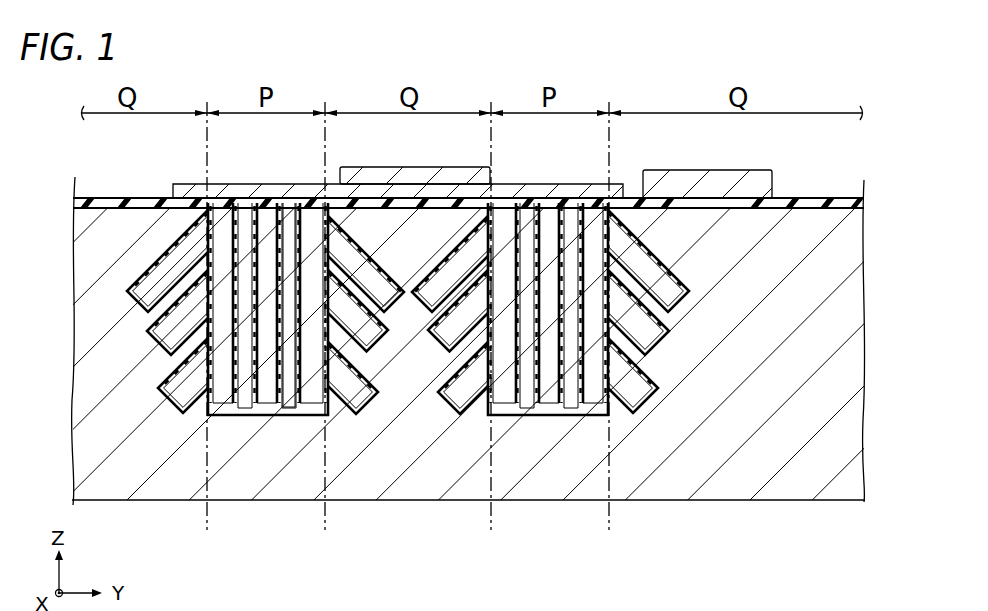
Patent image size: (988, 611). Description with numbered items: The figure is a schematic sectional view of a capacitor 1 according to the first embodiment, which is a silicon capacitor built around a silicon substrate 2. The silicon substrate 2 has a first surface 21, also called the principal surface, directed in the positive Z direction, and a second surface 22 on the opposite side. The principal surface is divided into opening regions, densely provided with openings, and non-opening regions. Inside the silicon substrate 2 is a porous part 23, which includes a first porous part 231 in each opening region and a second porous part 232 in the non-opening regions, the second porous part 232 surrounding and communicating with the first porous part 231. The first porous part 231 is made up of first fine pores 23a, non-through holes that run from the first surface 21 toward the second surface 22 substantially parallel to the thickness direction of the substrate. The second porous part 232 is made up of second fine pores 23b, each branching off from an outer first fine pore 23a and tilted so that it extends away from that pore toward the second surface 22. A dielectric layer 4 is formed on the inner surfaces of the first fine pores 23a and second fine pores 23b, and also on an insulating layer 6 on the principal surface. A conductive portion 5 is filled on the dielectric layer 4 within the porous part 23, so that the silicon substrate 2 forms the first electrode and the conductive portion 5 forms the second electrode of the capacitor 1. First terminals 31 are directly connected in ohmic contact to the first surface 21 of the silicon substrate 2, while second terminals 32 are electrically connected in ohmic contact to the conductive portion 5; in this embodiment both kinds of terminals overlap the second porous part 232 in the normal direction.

The capacitor 1 is at (494, 339).
The silicon substrate 2 is at (854, 313).
The dielectric layer 4 is at (168, 262).
The conductive portion 5 is at (266, 197).
The insulating layer 6 is at (74, 201).
The first surface 21 is at (708, 205).
The second surface 22 is at (783, 502).
The porous part 23 is at (406, 332).
The first fine pore 23a is at (261, 328).
The second fine pore 23b is at (168, 402).
The first terminal 31 is at (684, 182).
The second terminal 32 is at (417, 182).
The first porous part 231 is at (170, 366).
The second porous part 232 is at (155, 340).